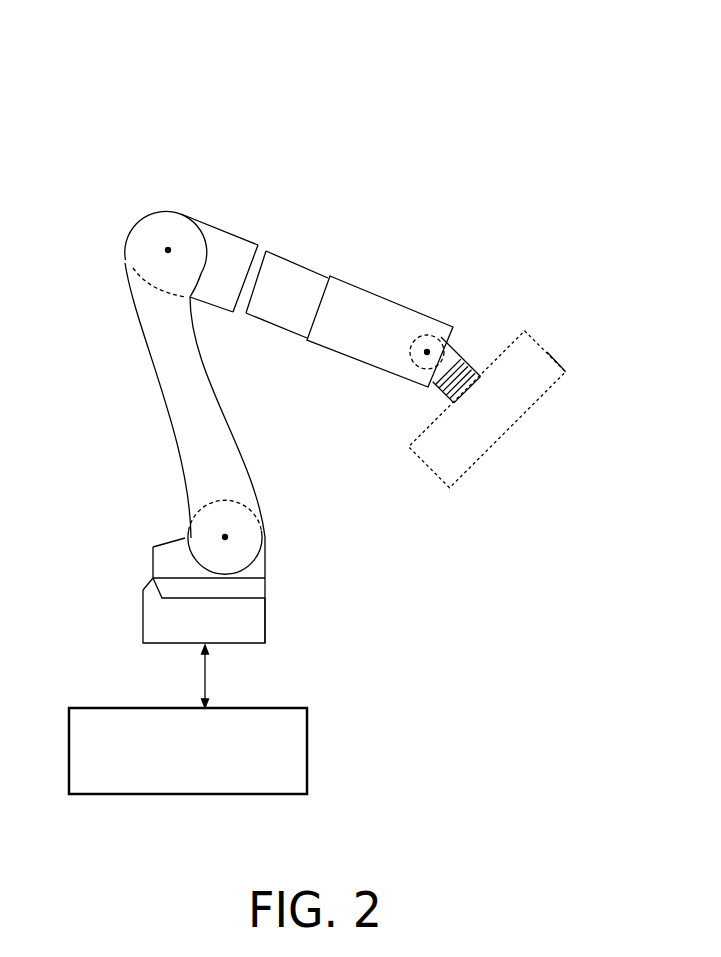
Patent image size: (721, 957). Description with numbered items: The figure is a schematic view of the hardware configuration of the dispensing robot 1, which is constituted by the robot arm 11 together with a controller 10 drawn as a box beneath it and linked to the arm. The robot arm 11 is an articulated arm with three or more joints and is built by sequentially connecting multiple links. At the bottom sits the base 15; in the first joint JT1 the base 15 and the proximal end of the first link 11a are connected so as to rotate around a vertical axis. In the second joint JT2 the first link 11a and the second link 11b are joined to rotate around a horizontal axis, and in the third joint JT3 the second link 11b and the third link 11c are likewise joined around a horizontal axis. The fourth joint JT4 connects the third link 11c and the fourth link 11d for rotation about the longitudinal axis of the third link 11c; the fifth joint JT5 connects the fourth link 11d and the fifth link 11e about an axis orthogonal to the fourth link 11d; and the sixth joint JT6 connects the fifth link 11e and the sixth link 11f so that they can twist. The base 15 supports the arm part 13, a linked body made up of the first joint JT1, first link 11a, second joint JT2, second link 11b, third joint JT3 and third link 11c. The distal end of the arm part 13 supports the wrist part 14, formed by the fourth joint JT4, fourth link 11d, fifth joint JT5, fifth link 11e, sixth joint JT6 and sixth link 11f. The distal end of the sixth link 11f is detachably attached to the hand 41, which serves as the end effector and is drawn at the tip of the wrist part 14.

The dispensing robot 1 is at (120, 133).
The controller 10 is at (307, 745).
The robot arm 11 is at (280, 637).
The first link 11a is at (163, 540).
The second link 11b is at (156, 393).
The third link 11c is at (222, 229).
The fourth link 11d is at (373, 285).
The fifth link 11e is at (462, 338).
The sixth link 11f is at (433, 390).
The arm part 13 is at (147, 345).
The wrist part 14 is at (346, 360).
The base 15 is at (141, 590).
The hand 41 is at (548, 343).
The first joint JT1 is at (267, 585).
The second joint JT2 is at (243, 541).
The third joint JT3 is at (150, 240).
The fourth joint JT4 is at (272, 255).
The fifth joint JT5 is at (426, 335).
The sixth joint JT6 is at (472, 352).